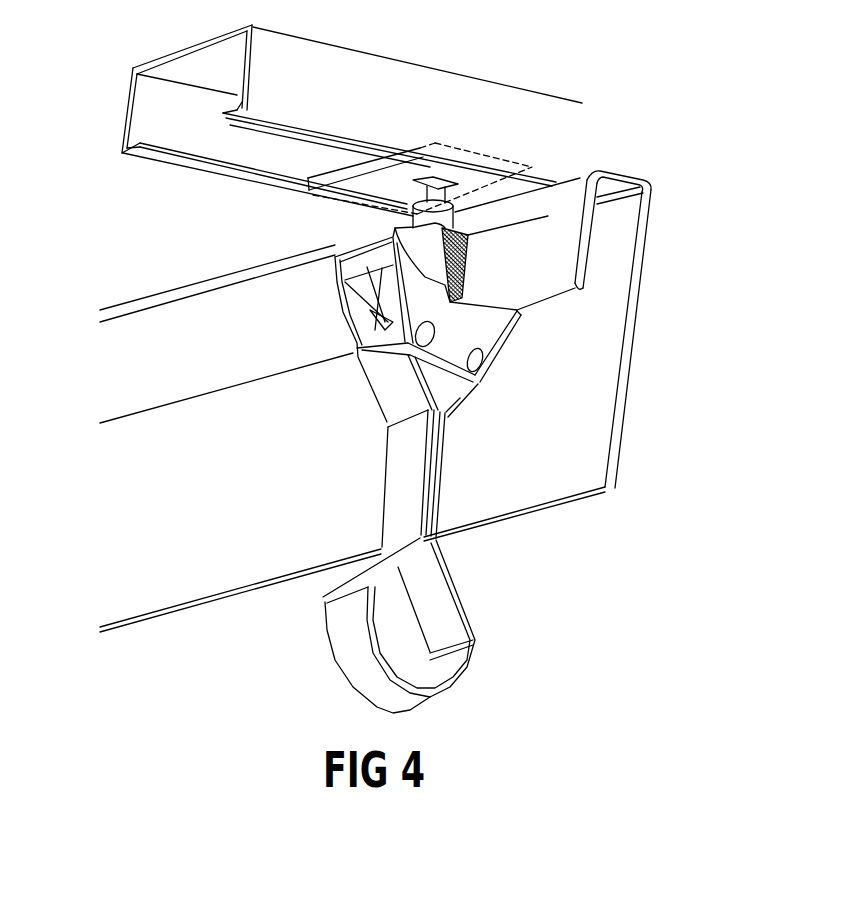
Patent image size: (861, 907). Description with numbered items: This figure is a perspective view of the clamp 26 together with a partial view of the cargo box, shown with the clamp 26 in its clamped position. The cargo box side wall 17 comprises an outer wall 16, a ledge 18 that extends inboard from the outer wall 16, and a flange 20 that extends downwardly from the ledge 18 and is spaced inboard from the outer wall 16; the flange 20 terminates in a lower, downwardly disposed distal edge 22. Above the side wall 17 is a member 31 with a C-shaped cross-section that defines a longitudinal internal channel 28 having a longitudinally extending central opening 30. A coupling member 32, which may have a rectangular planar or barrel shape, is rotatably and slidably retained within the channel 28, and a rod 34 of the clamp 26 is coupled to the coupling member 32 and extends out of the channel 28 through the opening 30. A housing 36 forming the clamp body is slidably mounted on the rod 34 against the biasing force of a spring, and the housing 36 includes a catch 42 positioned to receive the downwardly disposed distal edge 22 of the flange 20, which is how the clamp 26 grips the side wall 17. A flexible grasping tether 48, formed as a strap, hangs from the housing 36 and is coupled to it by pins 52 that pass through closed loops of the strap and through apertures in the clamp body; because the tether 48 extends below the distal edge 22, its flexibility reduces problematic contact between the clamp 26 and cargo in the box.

The outer wall 16 is at (630, 350).
The side wall 17 is at (668, 265).
The ledge 18 is at (618, 180).
The flange 20 is at (583, 243).
The distal edge 22 is at (573, 290).
The clamp 26 is at (318, 229).
The channel 28 is at (125, 110).
The central opening 30 is at (242, 150).
The bracket 31 is at (320, 78).
The coupling member 32 is at (540, 165).
The rod 34 is at (448, 190).
The housing 36 is at (493, 343).
The catch 42 is at (517, 312).
The grasping tether 48 is at (464, 705).
The pin 52 is at (463, 397).